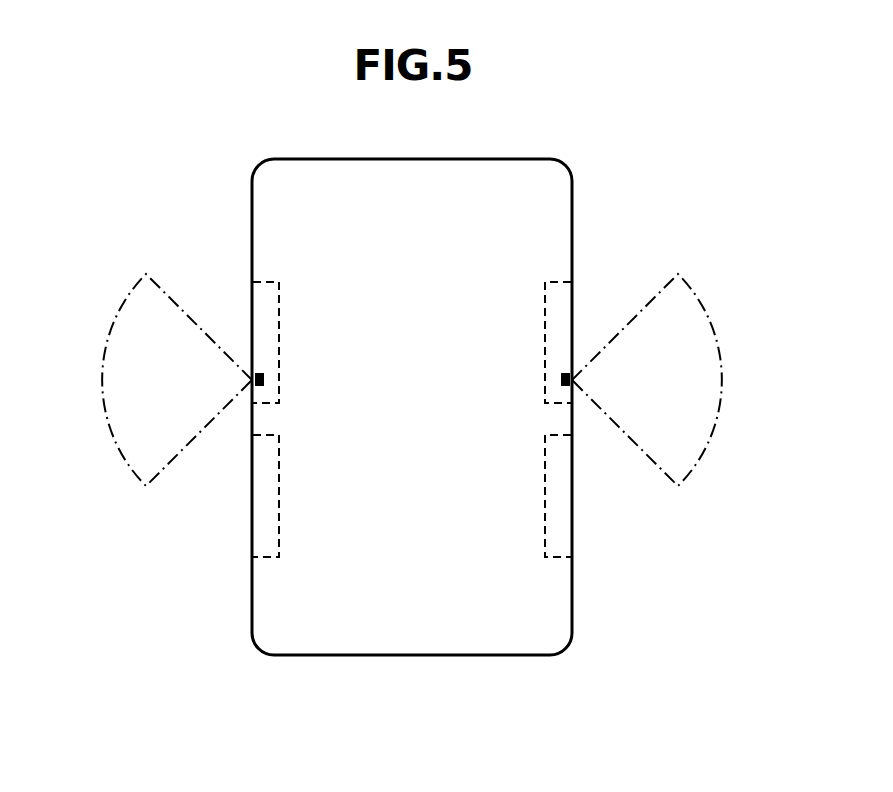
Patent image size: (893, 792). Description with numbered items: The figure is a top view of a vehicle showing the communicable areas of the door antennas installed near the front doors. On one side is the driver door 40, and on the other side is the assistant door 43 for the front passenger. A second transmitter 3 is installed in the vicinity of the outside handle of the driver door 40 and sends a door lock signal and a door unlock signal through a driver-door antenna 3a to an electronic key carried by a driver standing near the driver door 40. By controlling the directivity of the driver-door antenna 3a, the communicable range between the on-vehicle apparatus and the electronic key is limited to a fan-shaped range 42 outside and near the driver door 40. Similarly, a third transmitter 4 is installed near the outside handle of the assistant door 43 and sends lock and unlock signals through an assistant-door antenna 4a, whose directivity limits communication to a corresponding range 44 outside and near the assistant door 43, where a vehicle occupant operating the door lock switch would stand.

The second transmitter 3 is at (504, 410).
The driver-door antenna 3a is at (561, 381).
The third transmitter 4 is at (311, 401).
The assistant-door antenna 4a is at (264, 379).
The driver door 40 is at (563, 303).
The communicable range 42 is at (703, 308).
The assistant door 43 is at (258, 302).
The communicable range 44 is at (121, 302).